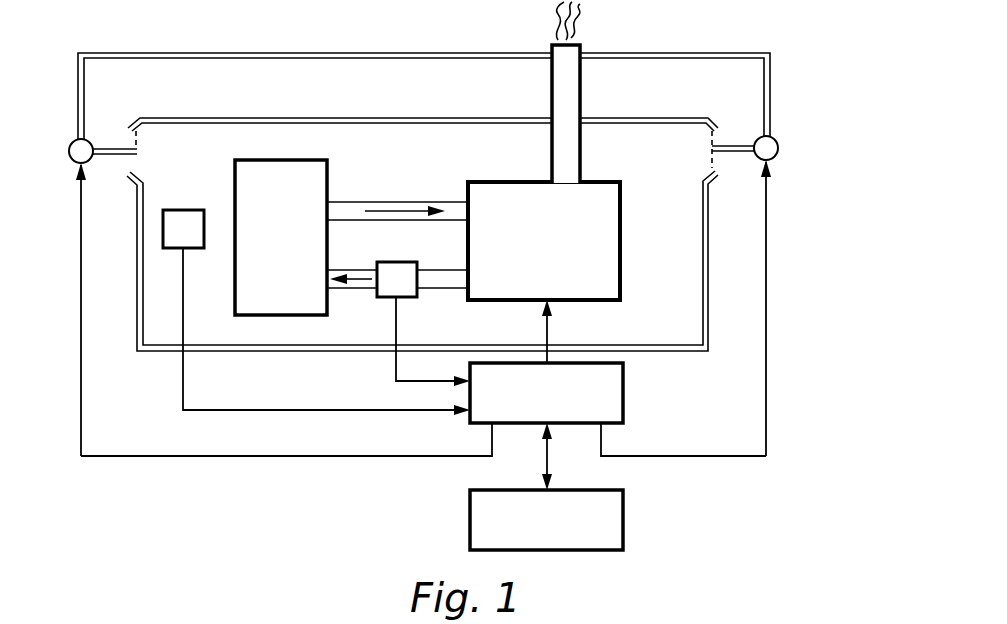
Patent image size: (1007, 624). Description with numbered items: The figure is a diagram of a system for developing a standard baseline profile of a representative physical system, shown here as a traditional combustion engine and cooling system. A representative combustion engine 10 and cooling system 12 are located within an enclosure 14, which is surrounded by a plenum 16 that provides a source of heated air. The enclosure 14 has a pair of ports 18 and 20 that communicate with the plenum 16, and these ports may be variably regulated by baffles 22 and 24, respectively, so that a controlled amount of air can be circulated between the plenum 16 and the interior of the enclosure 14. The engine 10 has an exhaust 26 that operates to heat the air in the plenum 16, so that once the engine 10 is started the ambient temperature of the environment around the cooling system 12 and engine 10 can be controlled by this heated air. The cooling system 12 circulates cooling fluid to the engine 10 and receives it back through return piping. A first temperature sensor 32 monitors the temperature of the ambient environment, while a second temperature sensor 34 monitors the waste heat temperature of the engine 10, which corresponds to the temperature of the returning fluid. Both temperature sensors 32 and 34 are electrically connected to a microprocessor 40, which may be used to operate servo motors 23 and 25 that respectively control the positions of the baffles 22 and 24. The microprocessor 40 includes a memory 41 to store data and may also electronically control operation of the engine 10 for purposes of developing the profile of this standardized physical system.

The combustion engine 10 is at (613, 253).
The cooling system 12 is at (327, 172).
The enclosure 14 is at (705, 290).
The plenum 16 is at (308, 88).
The port 18 is at (140, 161).
The port 20 is at (695, 145).
The baffle 22 is at (128, 162).
The servo motor 23 is at (76, 142).
The baffle 24 is at (727, 157).
The servo motor 25 is at (779, 143).
The exhaust 26 is at (568, 70).
The first temperature sensor 32 is at (178, 210).
The second temperature sensor 34 is at (403, 262).
The microprocessor 40 is at (625, 392).
The memory 41 is at (625, 523).